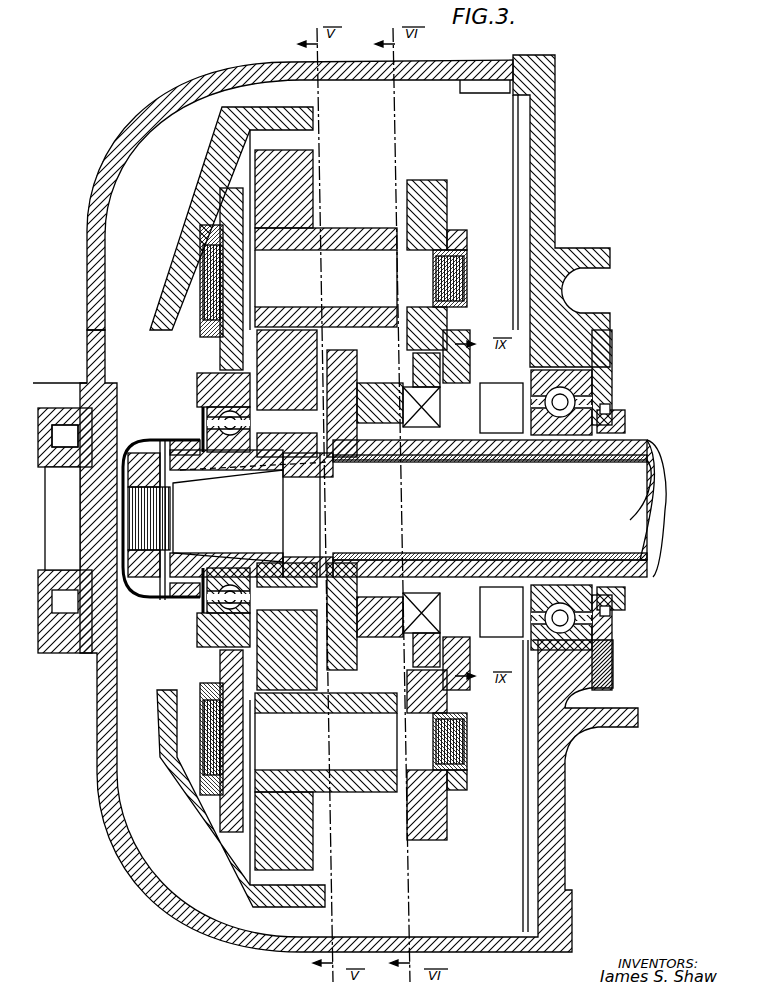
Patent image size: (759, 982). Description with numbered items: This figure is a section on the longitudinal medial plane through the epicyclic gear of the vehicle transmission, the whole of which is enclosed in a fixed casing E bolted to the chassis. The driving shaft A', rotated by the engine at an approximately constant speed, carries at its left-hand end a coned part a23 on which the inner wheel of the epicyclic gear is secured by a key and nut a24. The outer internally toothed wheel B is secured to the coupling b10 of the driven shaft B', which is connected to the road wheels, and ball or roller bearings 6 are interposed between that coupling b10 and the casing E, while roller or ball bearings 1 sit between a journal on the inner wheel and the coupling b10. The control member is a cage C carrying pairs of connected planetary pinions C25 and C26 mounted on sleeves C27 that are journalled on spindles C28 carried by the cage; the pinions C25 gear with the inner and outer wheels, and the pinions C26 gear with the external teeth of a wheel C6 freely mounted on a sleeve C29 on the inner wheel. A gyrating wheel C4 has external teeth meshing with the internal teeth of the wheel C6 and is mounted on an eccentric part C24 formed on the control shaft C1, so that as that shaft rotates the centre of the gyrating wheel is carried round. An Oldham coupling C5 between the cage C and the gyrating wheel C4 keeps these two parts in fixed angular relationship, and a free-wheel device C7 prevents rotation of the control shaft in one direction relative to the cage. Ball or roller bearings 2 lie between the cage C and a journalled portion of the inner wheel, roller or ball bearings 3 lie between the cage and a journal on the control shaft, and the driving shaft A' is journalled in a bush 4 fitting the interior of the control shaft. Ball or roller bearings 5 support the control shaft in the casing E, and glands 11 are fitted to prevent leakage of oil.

The fixed casing E is at (540, 208).
The outer internally toothed wheel B is at (255, 507).
The control member (cage) C is at (440, 200).
The planetary pinions C25 is at (295, 175).
The planetary pinions C26 is at (360, 228).
The sleeves C27 is at (375, 252).
The spindles C28 is at (440, 292).
The ball or roller bearings 2 is at (200, 412).
The gyrating wheel C4 is at (410, 462).
The Oldham coupling C5 is at (465, 388).
The free-wheel device C7 is at (455, 462).
The ball or roller bearings 5 is at (596, 388).
The glands 11 is at (612, 410).
The key and nut a24 is at (172, 555).
The coned part a23 is at (238, 570).
The sleeve C29 is at (302, 470).
The roller or ball bearings 3 is at (505, 428).
The bush 4 is at (480, 555).
The driving shaft A' is at (620, 508).
The control shaft C1 is at (655, 445).
The wheel C6 is at (348, 462).
The eccentric part C24 is at (382, 464).
The roller or ball bearings 1 is at (178, 436).
The driven shaft B' is at (56, 518).
The coupling b10 is at (82, 490).
The ball or roller bearings 6 is at (62, 425).